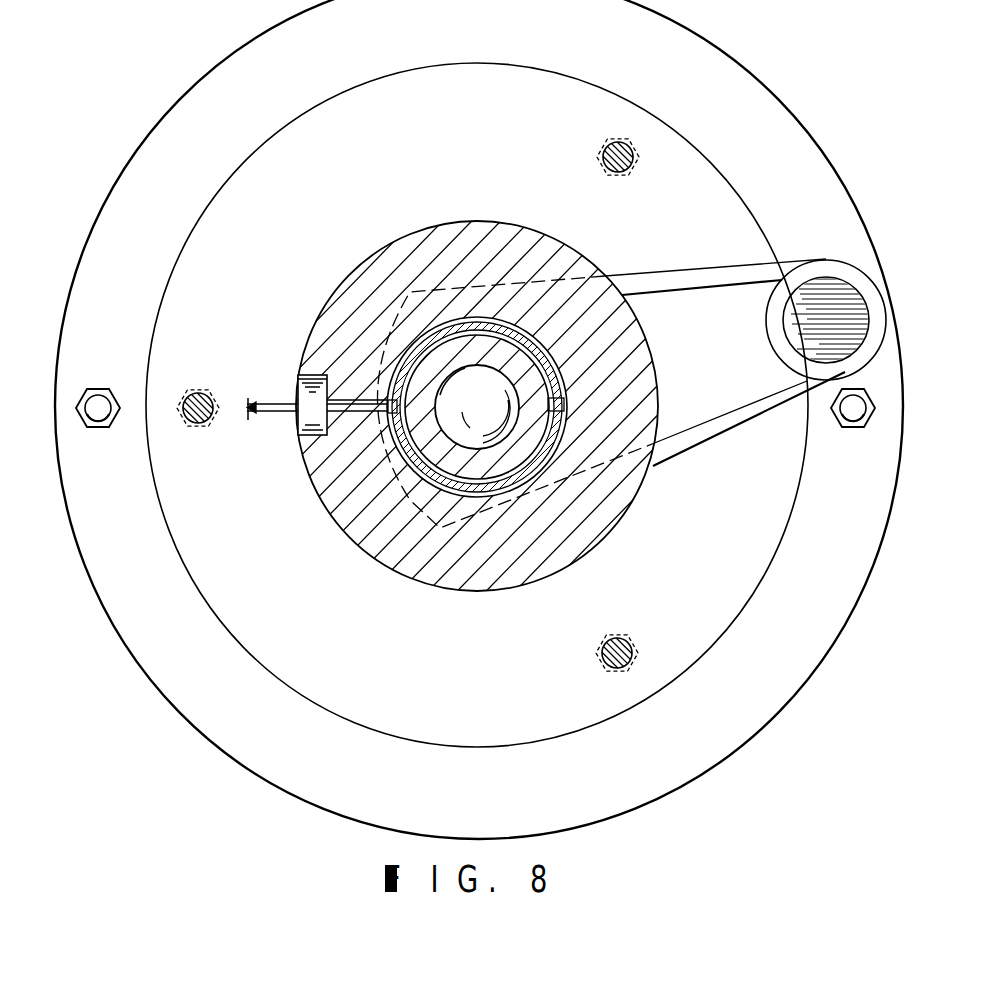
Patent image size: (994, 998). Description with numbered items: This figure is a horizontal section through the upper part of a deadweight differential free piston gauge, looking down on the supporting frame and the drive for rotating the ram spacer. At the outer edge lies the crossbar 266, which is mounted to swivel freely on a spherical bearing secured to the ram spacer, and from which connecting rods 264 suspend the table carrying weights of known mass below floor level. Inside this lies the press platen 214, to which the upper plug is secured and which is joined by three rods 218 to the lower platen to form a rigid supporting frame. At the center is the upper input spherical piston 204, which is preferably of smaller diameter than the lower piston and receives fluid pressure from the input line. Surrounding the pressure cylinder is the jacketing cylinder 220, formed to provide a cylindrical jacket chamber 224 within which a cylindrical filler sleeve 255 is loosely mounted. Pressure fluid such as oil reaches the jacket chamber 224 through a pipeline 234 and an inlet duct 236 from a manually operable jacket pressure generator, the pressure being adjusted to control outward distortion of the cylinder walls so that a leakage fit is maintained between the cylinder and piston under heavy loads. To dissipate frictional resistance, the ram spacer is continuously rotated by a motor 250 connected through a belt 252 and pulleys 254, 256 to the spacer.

The spherical piston 204 is at (500, 404).
The press platen 214 is at (319, 105).
The rods 218 is at (606, 148).
The jacketing cylinder 220 is at (308, 472).
The jacket chamber 224 is at (553, 477).
The pipeline 234 is at (278, 413).
The inlet duct 236 is at (337, 395).
The motor 250 is at (784, 316).
The belt 252 is at (737, 418).
The pulley 254 is at (838, 272).
The cylindrical filler sleeve 255 is at (557, 477).
The pulley 256 is at (409, 580).
The connecting rods 264 is at (97, 402).
The crossbar 266 is at (102, 572).